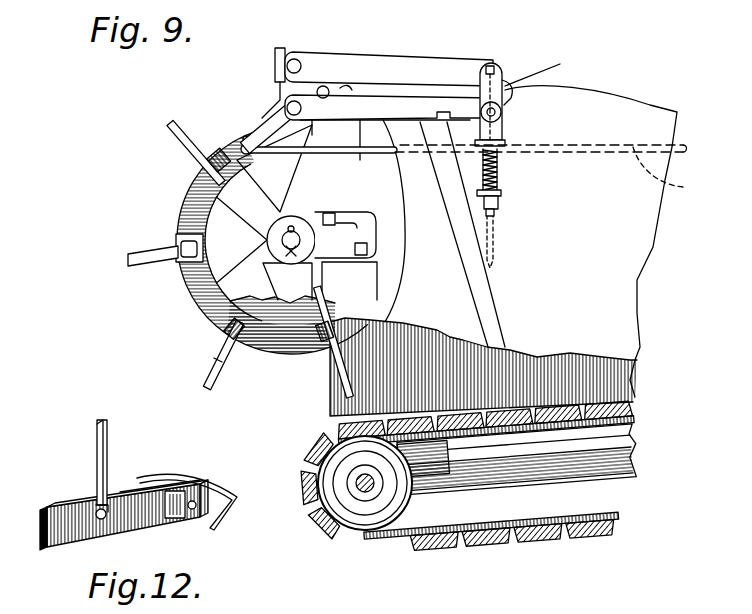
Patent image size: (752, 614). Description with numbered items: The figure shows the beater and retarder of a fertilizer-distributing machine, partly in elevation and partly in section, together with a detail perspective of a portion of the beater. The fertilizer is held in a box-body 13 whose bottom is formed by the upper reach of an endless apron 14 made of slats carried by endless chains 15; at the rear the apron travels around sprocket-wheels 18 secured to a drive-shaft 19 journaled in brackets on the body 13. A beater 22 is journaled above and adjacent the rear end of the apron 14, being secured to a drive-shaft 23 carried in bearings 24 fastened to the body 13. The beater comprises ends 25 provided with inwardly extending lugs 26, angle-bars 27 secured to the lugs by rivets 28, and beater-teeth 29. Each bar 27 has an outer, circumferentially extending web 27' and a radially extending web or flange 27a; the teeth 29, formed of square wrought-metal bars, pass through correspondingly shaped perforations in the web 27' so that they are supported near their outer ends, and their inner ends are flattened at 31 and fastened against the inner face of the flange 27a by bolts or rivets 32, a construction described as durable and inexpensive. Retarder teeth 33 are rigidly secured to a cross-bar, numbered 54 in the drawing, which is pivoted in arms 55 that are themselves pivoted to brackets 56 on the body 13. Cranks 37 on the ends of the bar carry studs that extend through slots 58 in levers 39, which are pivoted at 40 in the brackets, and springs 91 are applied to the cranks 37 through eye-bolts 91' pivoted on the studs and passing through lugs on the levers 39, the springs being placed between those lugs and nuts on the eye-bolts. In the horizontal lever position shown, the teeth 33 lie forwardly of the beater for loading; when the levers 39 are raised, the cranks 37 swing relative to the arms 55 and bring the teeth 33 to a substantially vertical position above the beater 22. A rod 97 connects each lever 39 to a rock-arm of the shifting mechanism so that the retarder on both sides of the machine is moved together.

In FIG. 9, the box-body 13 is at (620, 298).
In FIG. 9, the endless apron 14 is at (600, 531).
In FIG. 9, the endless chains 15 is at (530, 524).
In FIG. 9, the sprocket-wheels 18 is at (388, 512).
In FIG. 9, the drive-shaft 19 is at (362, 494).
In FIG. 9, the beater 22 is at (282, 352).
In FIG. 9, the drive-shaft 23 is at (282, 237).
In FIG. 9, the bearings 24 is at (370, 241).
In FIG. 9, the ends 25 is at (398, 225).
In FIG. 12, the ends 25 is at (217, 498).
In FIG. 9, the inwardly extending lugs 26 is at (180, 233).
In FIG. 12, the inwardly extending lugs 26 is at (178, 518).
In FIG. 12, the angle-bars 27 is at (122, 508).
In FIG. 12, the radially extending web or flange 27a is at (48, 545).
In FIG. 12, the circumferentially extending web 27' is at (164, 482).
In FIG. 12, the rivets 28 is at (198, 535).
In FIG. 9, the beater-teeth 29 is at (130, 262).
In FIG. 12, the beater-teeth 29 is at (102, 467).
In FIG. 9, the flattened inner ends 31 is at (319, 145).
In FIG. 12, the flattened inner ends 31 is at (103, 510).
In FIG. 9, the bolts or rivets 32 is at (240, 158).
In FIG. 12, the bolts or rivets 32 is at (107, 523).
In FIG. 9, the retarder teeth 33 is at (497, 243).
In FIG. 9, the cranks 37 is at (505, 93).
In FIG. 9, the levers 39 is at (370, 105).
In FIG. 9, the pivot 40 is at (280, 103).
In FIG. 9, the pin 54 is at (495, 70).
In FIG. 9, the arm 55 is at (413, 60).
In FIG. 9, the bracket 56 is at (290, 88).
In FIG. 9, the line 58 is at (543, 69).
In FIG. 9, the spring 91 is at (516, 179).
In FIG. 9, the spring end 91' is at (519, 213).
In FIG. 9, the rod 97 is at (671, 172).